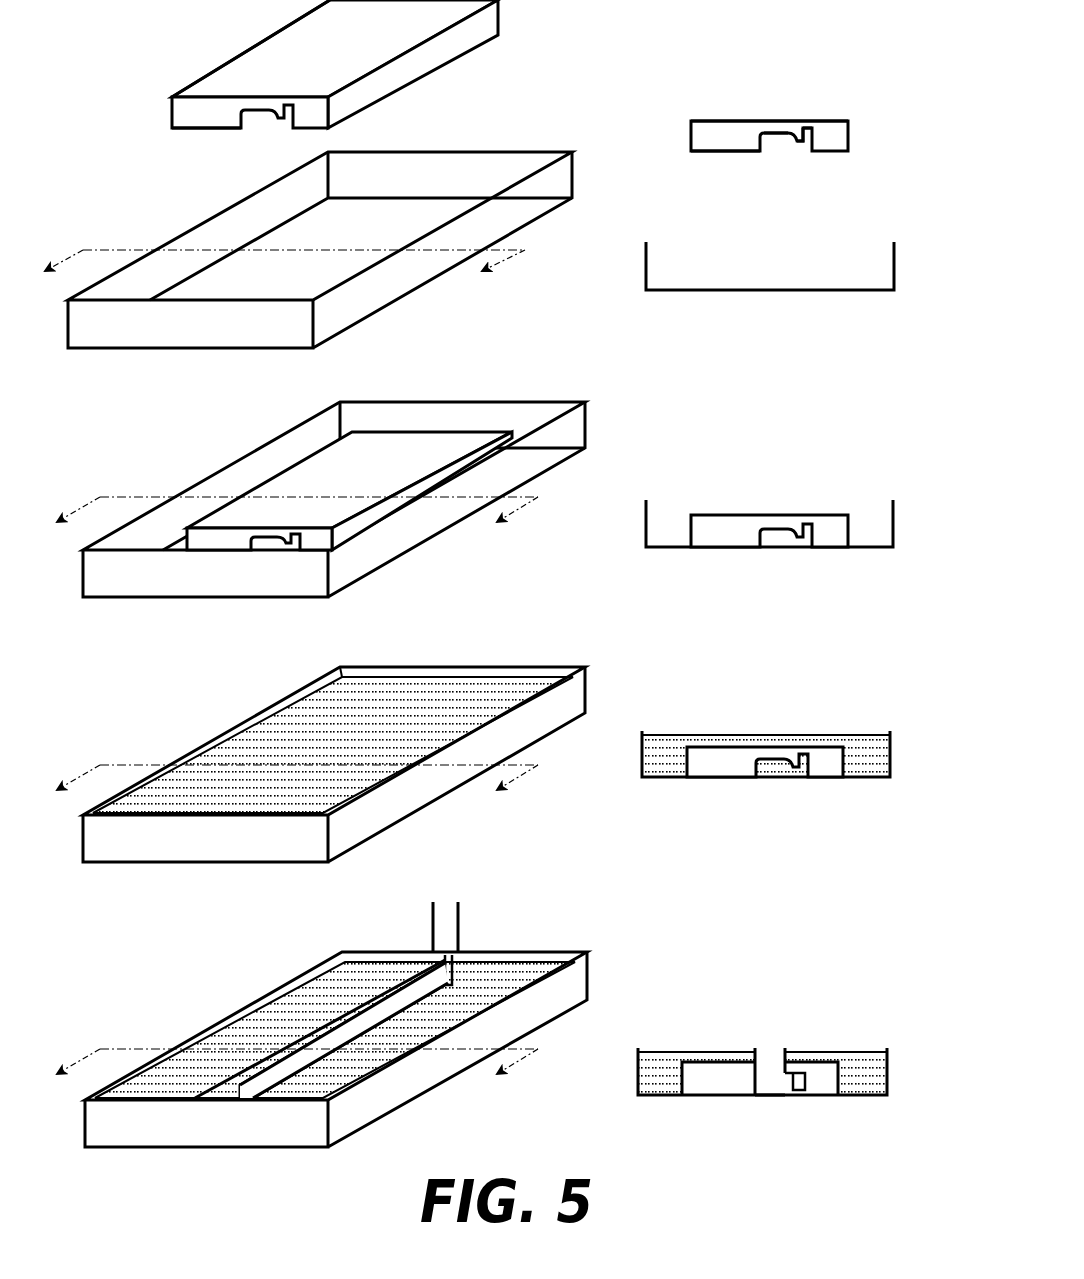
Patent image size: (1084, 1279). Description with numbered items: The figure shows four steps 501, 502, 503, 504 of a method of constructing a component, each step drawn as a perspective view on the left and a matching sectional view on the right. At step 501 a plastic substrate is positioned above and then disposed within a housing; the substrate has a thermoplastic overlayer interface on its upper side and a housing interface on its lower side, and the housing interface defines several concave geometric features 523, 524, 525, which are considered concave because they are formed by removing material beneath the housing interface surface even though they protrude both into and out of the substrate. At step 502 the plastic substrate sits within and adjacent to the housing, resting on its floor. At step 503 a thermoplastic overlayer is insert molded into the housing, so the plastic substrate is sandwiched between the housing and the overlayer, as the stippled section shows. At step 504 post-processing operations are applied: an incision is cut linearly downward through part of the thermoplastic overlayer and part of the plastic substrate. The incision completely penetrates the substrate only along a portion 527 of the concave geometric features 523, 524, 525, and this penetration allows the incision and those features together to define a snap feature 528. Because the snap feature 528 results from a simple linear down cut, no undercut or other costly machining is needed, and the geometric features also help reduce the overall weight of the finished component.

The step 501 is at (104, 197).
The step 502 is at (108, 466).
The step 503 is at (108, 736).
The step 504 is at (110, 1017).
The concave geometric feature 523 is at (773, 134).
The concave geometric feature 524 is at (800, 131).
The concave geometric feature 525 is at (808, 121).
The portion 527 is at (759, 1087).
The snap feature 528 is at (800, 1088).